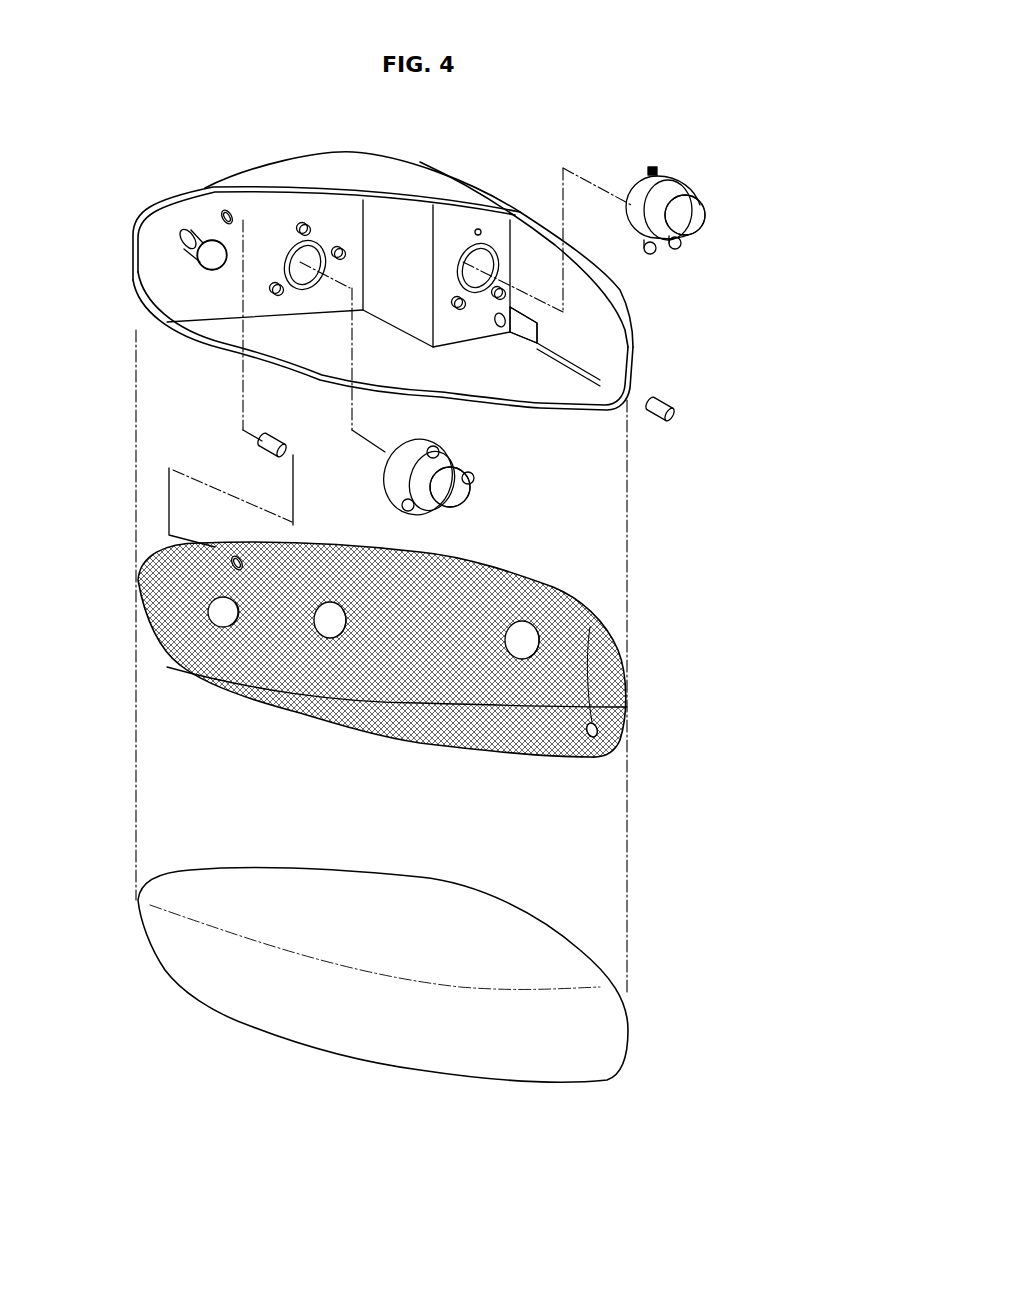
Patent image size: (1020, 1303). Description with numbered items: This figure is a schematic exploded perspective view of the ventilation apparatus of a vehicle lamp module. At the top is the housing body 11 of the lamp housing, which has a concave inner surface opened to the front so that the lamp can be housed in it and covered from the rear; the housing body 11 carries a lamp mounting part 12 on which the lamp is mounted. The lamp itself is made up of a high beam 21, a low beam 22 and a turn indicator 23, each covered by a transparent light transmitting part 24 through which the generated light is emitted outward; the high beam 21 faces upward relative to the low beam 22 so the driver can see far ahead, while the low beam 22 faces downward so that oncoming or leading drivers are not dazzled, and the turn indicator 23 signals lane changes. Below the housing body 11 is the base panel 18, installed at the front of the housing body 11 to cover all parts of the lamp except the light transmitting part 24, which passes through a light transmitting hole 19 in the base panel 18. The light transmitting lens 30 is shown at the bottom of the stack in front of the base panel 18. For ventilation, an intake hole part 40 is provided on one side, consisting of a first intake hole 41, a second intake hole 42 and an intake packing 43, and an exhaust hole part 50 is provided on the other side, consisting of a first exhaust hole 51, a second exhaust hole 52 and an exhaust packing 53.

The housing body 11 is at (498, 190).
The lamp mounting part 12 is at (468, 268).
The base panel 18 is at (634, 734).
The light transmitting hole 19 is at (223, 608).
The high beam 21 is at (705, 176).
The low beam 22 is at (466, 512).
The turn indicator 23 is at (208, 230).
The light transmitting part 24 is at (207, 255).
The light transmitting lens 30 is at (465, 1050).
The intake hole part 40 is at (164, 389).
The first intake hole 41 is at (232, 224).
The second intake hole 42 is at (237, 558).
The intake packing 43 is at (262, 446).
The exhaust hole part 50 is at (640, 522).
The first exhaust hole 51 is at (507, 313).
The second exhaust hole 52 is at (652, 628).
The exhaust packing 53 is at (650, 416).